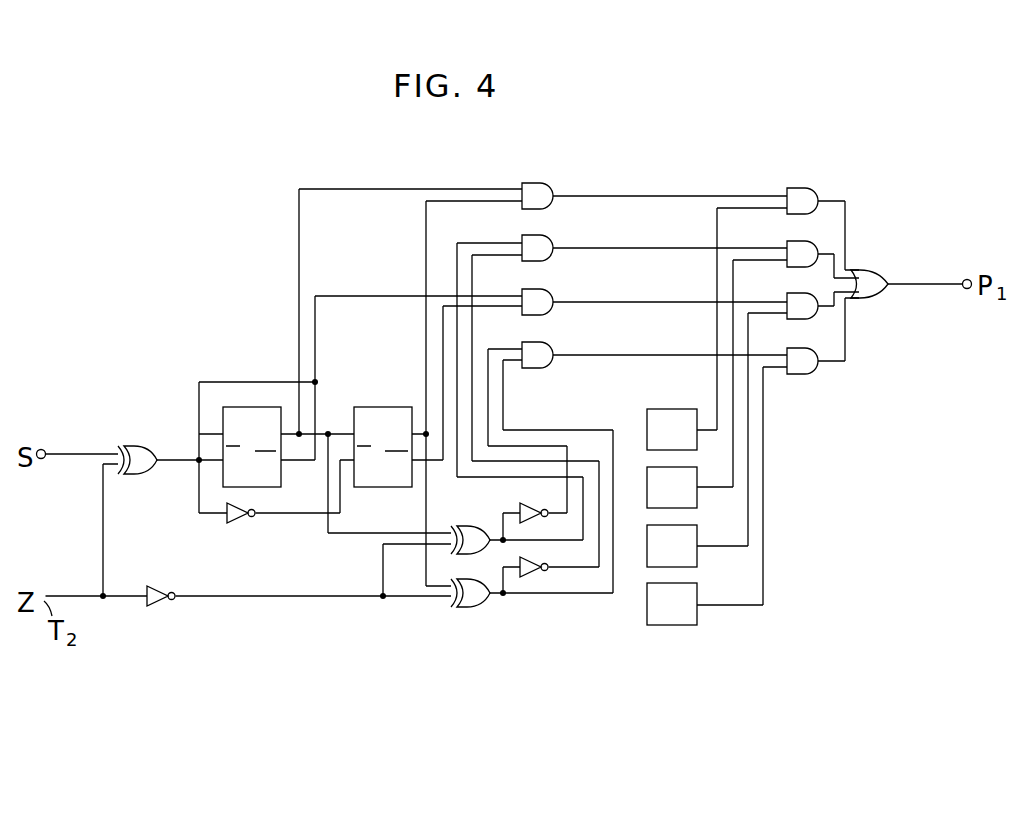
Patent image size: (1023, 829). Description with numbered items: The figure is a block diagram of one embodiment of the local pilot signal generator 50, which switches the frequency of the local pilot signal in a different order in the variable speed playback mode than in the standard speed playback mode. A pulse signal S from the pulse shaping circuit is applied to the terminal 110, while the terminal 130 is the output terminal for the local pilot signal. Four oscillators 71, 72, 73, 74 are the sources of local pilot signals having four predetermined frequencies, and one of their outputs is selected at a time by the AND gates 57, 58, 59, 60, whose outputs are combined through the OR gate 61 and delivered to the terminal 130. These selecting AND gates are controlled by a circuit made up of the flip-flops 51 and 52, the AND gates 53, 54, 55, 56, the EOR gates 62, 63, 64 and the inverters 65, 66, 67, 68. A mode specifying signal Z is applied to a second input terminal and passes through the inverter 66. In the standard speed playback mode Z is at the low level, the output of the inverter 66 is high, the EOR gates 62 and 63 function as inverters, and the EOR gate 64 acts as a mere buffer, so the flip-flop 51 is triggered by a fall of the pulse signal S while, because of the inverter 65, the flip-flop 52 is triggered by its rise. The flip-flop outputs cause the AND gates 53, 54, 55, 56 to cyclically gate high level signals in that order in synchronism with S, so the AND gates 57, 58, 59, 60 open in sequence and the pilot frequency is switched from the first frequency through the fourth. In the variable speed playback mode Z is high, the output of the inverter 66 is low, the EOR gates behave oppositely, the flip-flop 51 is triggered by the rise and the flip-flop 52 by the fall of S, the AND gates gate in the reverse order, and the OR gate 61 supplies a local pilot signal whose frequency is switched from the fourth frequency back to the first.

The pilot signal generator 50 is at (263, 238).
The flip-flop 51 is at (281, 479).
The flip-flop 52 is at (401, 488).
The AND gate 53 is at (551, 167).
The AND gate 54 is at (546, 223).
The AND gate 55 is at (546, 277).
The AND gate 56 is at (546, 328).
The AND gate 57 is at (815, 168).
The AND gate 58 is at (811, 223).
The AND gate 59 is at (803, 275).
The AND gate 60 is at (808, 328).
The OR gate 61 is at (878, 257).
The EOR gate 62 is at (472, 526).
The EOR gate 63 is at (472, 607).
The EOR gate 64 is at (140, 474).
The inverter 65 is at (251, 517).
The inverter 66 is at (170, 601).
The inverter 67 is at (531, 503).
The inverter 68 is at (543, 558).
The oscillator 71 is at (674, 408).
The oscillator 72 is at (697, 497).
The oscillator 73 is at (697, 555).
The oscillator 74 is at (697, 614).
The terminal 110 is at (42, 449).
The terminal 130 is at (964, 290).